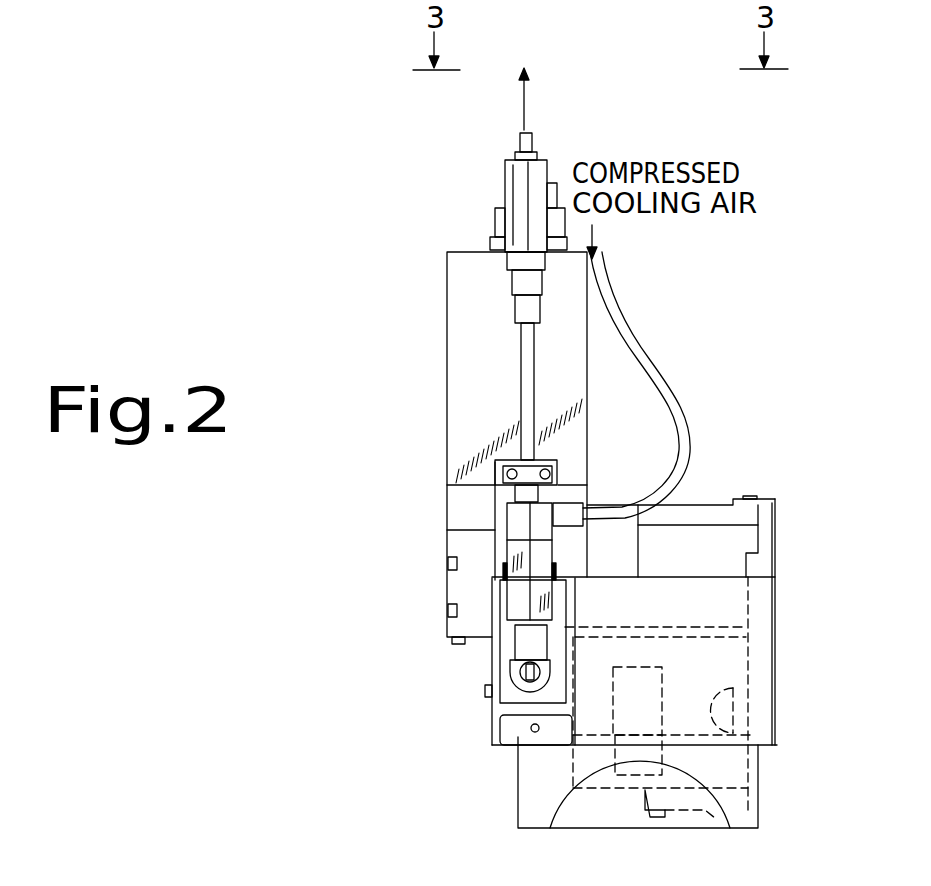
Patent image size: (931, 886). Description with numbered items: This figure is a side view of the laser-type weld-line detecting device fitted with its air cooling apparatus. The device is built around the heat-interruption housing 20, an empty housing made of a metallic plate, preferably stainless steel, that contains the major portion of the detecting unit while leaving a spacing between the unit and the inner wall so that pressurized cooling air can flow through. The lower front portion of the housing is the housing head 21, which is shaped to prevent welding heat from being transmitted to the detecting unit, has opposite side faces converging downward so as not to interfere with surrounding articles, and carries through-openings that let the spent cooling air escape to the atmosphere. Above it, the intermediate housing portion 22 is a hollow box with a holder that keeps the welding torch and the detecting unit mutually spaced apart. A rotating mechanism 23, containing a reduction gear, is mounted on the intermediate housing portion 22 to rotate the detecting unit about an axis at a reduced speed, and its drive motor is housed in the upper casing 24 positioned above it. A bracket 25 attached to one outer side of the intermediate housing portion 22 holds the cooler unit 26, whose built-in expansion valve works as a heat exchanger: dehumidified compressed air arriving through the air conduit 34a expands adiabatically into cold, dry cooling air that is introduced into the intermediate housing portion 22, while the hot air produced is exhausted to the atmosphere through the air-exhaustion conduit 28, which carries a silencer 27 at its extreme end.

The heat-interruption housing 20 is at (784, 582).
The housing head 21 is at (762, 775).
The intermediate housing portion 22 is at (778, 689).
The rotating mechanism 23 is at (730, 537).
The upper casing 24 is at (458, 305).
The bracket 25 is at (505, 650).
The cooler unit 26 is at (523, 515).
The silencer 27 is at (512, 188).
The air-exhaustion conduit 28 is at (523, 365).
The air conduit 34a is at (660, 383).